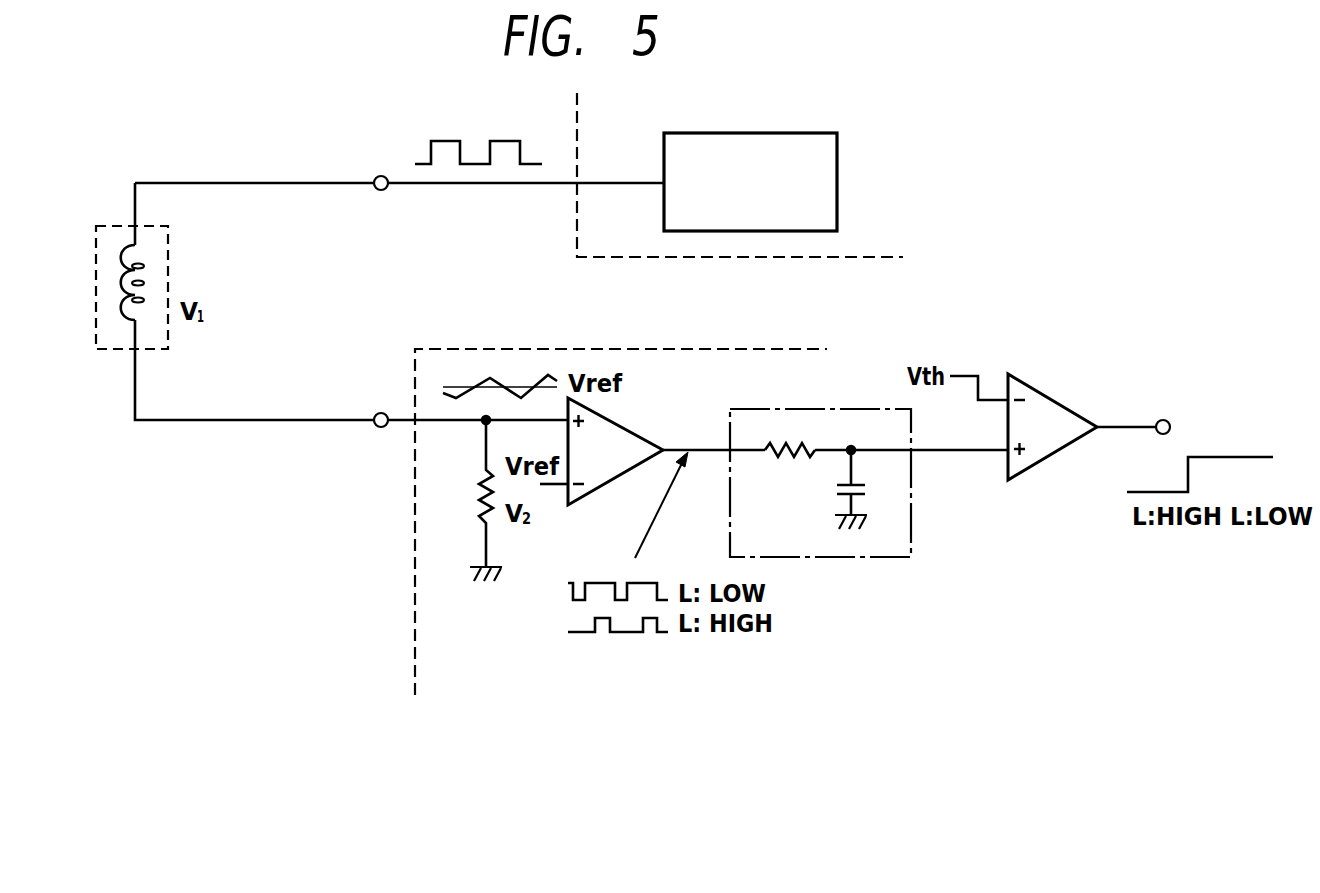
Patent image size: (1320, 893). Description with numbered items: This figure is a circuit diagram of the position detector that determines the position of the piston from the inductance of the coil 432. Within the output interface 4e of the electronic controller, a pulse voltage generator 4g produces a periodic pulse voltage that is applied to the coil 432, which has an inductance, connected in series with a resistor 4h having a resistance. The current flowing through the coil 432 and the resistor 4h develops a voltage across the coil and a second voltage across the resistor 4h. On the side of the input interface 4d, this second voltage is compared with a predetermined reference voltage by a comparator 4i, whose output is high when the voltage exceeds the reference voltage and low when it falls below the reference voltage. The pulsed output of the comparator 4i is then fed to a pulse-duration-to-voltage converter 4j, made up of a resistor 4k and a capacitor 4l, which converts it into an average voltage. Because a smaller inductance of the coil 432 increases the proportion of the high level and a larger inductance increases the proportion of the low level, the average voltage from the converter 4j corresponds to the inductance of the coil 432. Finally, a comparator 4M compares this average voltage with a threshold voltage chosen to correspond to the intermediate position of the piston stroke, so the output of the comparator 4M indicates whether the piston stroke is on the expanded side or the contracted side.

The coil 432 is at (142, 287).
The pulse voltage generator 4g is at (837, 197).
The output interface 4e is at (780, 257).
The input interface 4d is at (660, 348).
The comparator 4i is at (628, 425).
The resistor 4h is at (481, 518).
The pulse-duration-to-voltage converter 4j is at (890, 557).
The resistor 4k is at (792, 458).
The capacitor 4l is at (858, 483).
The comparator 4M is at (1043, 462).